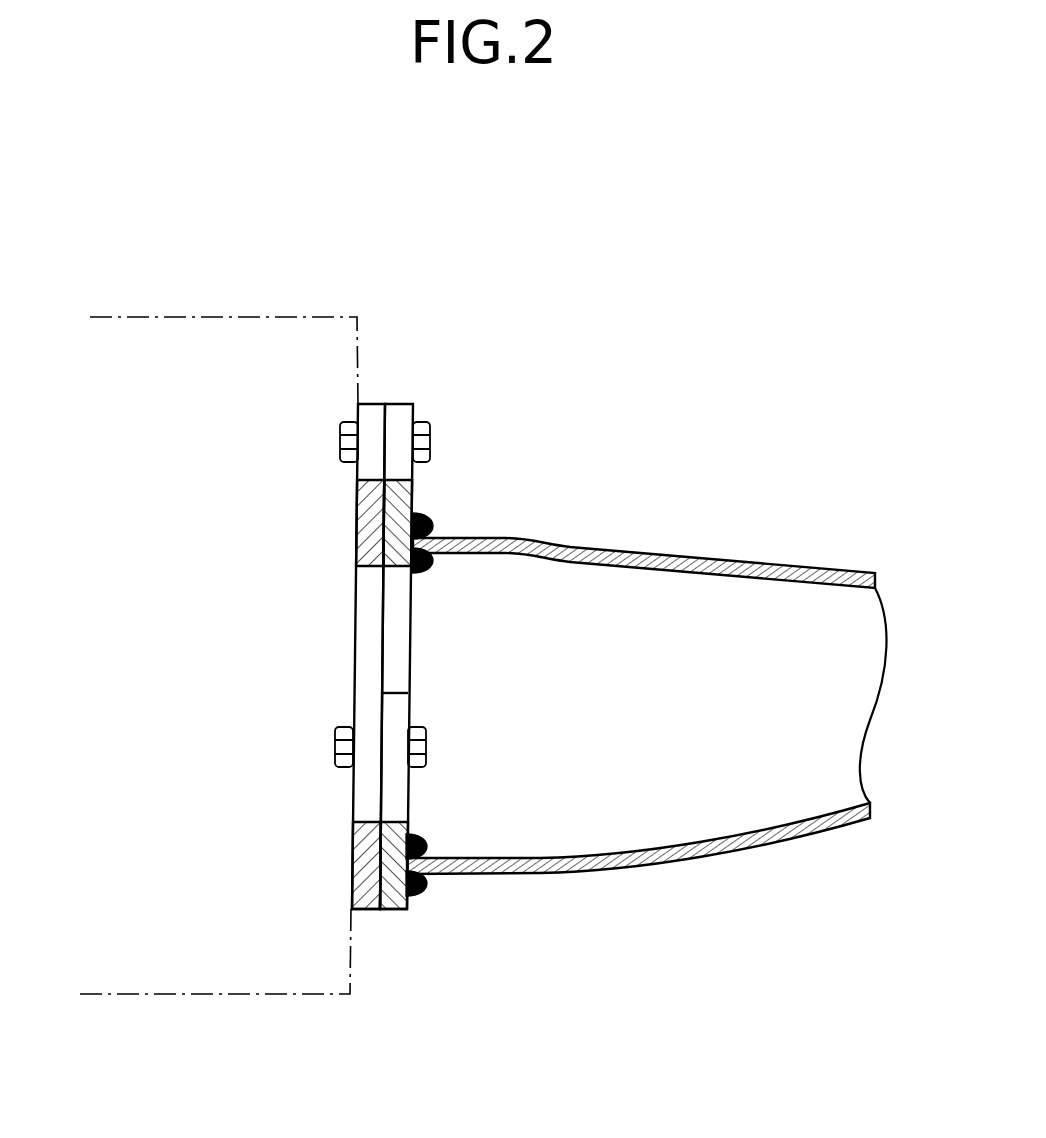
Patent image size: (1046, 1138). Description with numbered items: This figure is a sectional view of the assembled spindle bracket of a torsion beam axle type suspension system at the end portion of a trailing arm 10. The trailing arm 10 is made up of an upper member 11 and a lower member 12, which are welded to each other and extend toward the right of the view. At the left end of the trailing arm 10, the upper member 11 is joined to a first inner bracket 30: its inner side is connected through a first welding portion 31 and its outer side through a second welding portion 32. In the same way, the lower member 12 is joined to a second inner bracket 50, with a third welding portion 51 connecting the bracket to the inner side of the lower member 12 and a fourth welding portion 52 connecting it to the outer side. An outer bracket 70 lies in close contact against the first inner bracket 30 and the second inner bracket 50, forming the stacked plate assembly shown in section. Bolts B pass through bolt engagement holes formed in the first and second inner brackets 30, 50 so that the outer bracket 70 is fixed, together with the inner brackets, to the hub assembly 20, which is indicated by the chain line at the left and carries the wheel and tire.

The trailing arm 10 is at (723, 899).
The upper member 11 is at (812, 573).
The lower member 12 is at (797, 820).
The hub assembly 20 is at (312, 317).
The first inner bracket 30 is at (413, 486).
The first welding portion 31 is at (432, 562).
The second welding portion 32 is at (428, 526).
The second inner bracket 50 is at (400, 912).
The third welding portion 51 is at (425, 848).
The fourth welding portion 52 is at (420, 885).
The outer bracket 70 is at (368, 530).
The bolt B is at (425, 428).